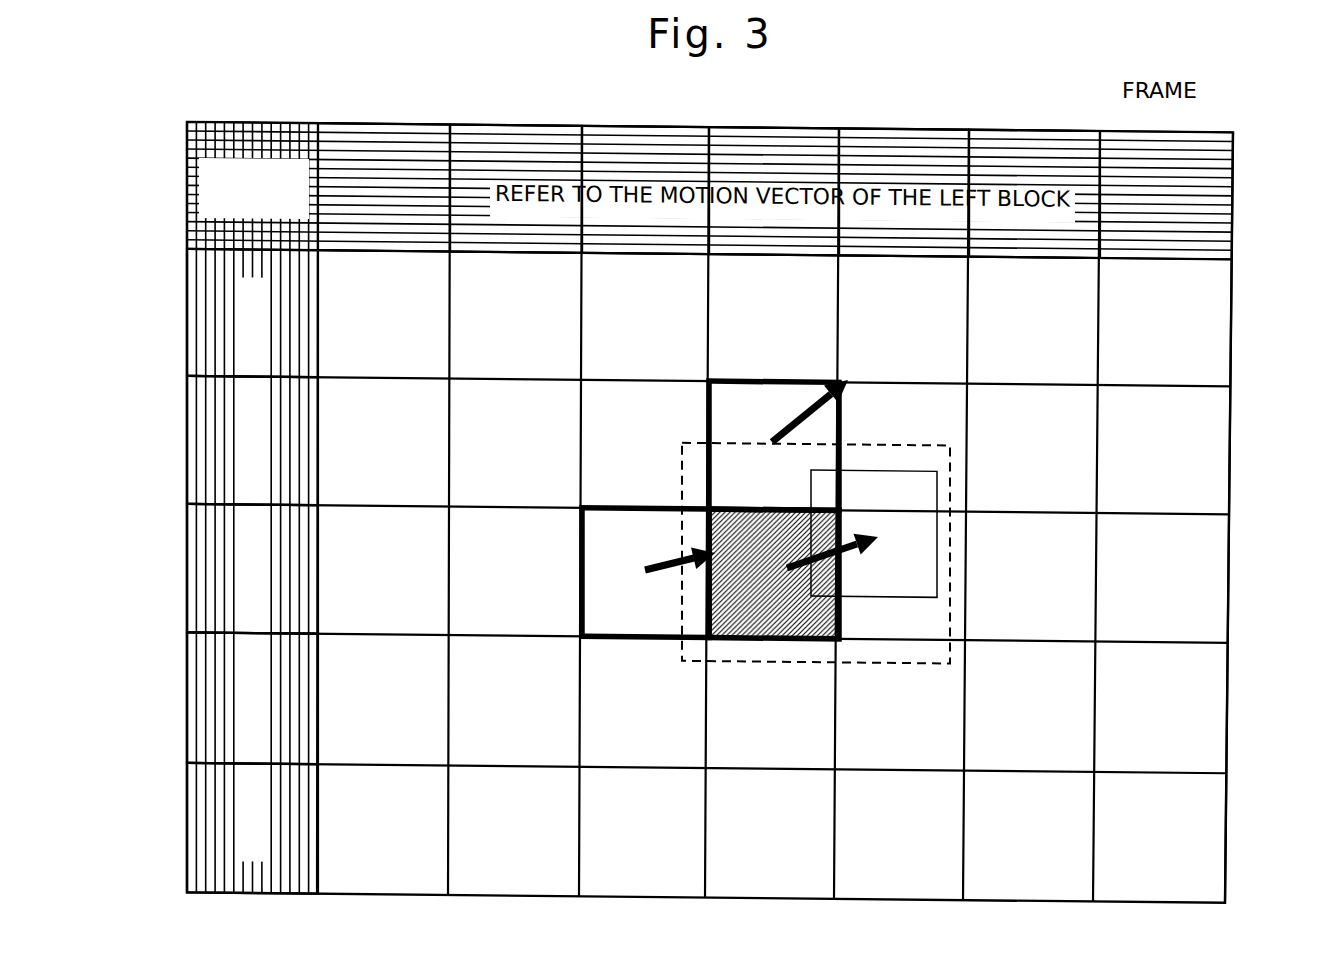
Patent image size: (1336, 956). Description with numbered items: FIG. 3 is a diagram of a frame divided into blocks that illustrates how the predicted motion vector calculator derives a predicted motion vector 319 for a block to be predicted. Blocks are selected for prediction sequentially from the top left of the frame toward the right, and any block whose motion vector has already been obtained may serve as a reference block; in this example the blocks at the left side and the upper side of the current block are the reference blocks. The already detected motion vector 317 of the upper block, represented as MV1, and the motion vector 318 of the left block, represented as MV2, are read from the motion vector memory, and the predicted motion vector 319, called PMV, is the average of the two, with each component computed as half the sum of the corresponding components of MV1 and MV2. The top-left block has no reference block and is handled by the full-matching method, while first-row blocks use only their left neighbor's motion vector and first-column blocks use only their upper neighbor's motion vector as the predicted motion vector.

The motion vector of the upper block 317 is at (795, 415).
The motion vector of the left block 318 is at (685, 562).
The predicted motion vector 319 is at (750, 575).